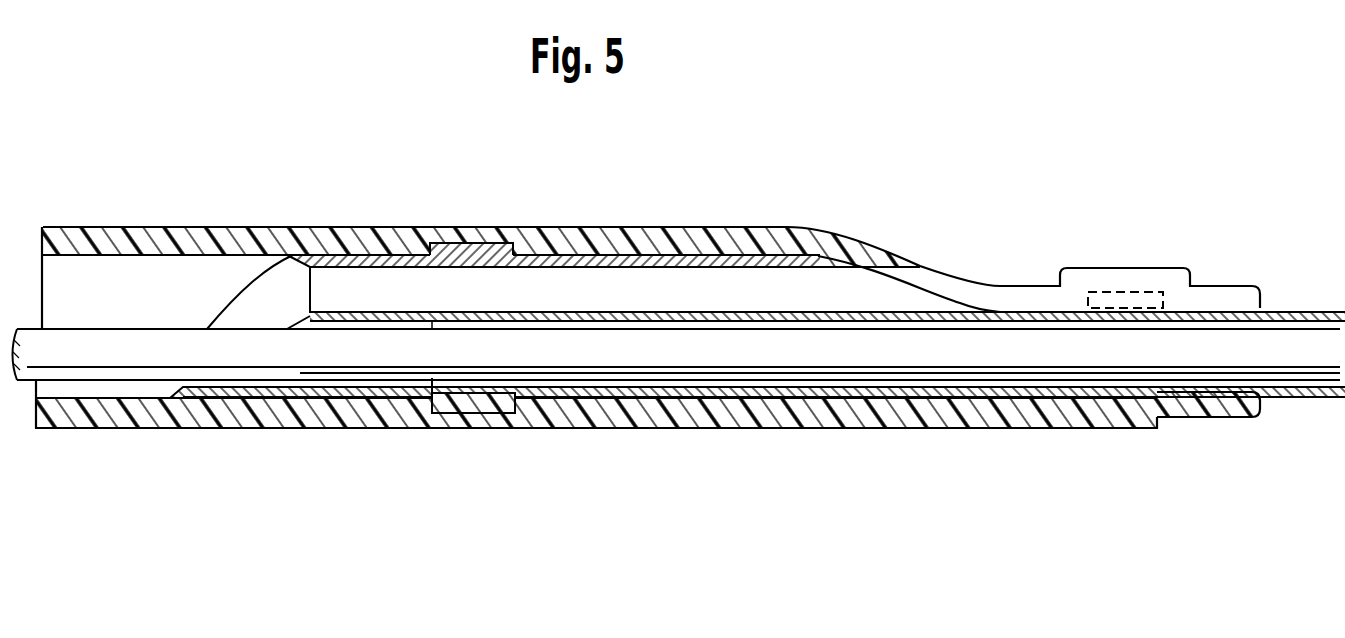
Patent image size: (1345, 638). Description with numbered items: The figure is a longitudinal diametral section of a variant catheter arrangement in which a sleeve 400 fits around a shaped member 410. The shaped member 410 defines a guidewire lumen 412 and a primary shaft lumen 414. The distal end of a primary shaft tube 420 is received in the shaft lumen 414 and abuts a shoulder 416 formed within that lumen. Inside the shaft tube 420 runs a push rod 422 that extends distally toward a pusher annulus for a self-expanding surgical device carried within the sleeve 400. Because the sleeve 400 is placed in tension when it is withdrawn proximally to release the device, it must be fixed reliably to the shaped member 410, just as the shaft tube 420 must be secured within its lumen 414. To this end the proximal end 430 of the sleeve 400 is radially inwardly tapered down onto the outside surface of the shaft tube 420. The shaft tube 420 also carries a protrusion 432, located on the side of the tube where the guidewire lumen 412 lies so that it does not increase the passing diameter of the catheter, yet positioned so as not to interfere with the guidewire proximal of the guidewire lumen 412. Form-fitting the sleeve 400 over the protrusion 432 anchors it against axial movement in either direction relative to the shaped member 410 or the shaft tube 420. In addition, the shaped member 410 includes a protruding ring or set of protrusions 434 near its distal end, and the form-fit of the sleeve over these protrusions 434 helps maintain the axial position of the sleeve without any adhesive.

The sleeve 400 is at (250, 240).
The shaped member 410 is at (695, 262).
The guidewire lumen 412 is at (780, 283).
The primary shaft lumen 414 is at (928, 327).
The protrusion 432 is at (1115, 300).
The push rod 422 is at (97, 358).
The shoulder 416 is at (415, 395).
The protruding ring or set of protrusions 434 is at (478, 402).
The primary shaft tube 420 is at (790, 400).
The proximal end 430 is at (1203, 408).